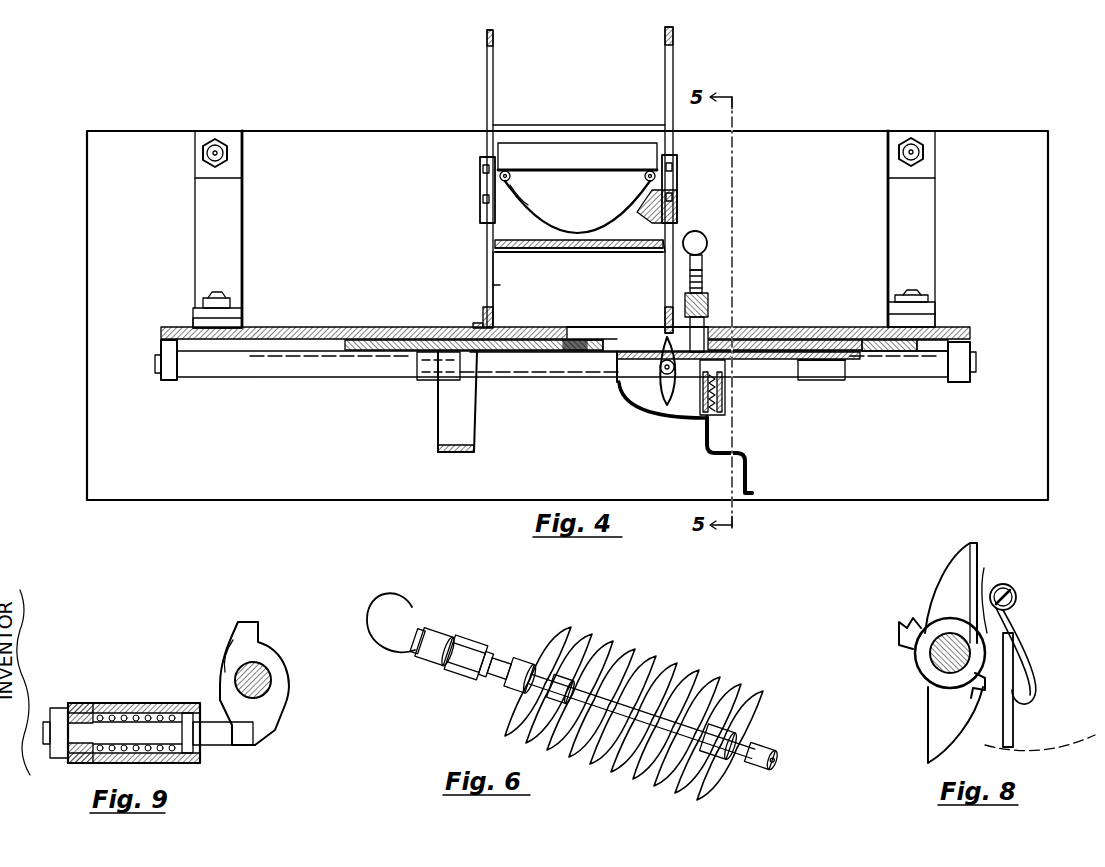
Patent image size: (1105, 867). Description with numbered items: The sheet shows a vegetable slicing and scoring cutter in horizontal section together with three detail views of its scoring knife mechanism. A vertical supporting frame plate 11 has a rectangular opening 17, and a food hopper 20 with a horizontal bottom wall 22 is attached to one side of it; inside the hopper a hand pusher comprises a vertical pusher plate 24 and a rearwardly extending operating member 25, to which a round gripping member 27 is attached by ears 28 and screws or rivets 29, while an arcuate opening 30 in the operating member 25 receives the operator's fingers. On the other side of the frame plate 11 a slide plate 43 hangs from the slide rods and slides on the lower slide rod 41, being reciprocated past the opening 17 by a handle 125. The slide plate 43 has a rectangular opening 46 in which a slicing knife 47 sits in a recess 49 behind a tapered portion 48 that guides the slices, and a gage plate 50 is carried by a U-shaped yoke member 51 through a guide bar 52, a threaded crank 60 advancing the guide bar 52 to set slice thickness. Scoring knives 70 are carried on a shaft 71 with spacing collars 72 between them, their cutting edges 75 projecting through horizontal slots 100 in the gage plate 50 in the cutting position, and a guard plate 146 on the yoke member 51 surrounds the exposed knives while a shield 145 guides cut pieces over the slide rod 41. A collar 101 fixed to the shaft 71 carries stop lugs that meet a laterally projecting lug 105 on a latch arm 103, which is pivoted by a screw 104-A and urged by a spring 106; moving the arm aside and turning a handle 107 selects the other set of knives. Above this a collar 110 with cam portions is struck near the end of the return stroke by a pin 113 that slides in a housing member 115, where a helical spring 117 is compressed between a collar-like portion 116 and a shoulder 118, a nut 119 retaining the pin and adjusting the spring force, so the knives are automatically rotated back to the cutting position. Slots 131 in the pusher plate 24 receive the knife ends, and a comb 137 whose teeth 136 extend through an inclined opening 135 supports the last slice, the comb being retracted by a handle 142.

In FIG. 4, the supporting frame plate 11 is at (165, 330).
In FIG. 4, the rectangular opening 17 is at (495, 327).
In FIG. 4, the food hopper 20 is at (579, 268).
In FIG. 4, the horizontal bottom wall 22 is at (490, 285).
In FIG. 4, the vertical pusher plate 24 is at (512, 258).
In FIG. 4, the operating member 25 is at (632, 230).
In FIG. 4, the gripping member 27 is at (586, 150).
In FIG. 4, the ears 28 is at (652, 172).
In FIG. 4, the screws or rivets 29 is at (644, 178).
In FIG. 4, the arcuate opening 30 is at (530, 200).
In FIG. 4, the slide rod 41 is at (275, 375).
In FIG. 4, the slide plate 43 is at (895, 355).
In FIG. 4, the rectangular opening 46 is at (825, 345).
In FIG. 4, the slicing knife 47 is at (596, 342).
In FIG. 4, the tapered portion 48 is at (593, 345).
In FIG. 4, the recess 49 is at (566, 342).
In FIG. 4, the gage plate 50 is at (800, 360).
In FIG. 4, the yoke member 51 is at (727, 408).
In FIG. 4, the guide bar 52 is at (728, 380).
In FIG. 4, the crank 60 is at (720, 458).
In FIG. 4, the scoring knives 70 is at (672, 385).
In FIG. 6, the scoring knives 70 is at (762, 710).
In FIG. 8, the scoring knives 70 is at (948, 580).
In FIG. 9, the shaft 71 is at (262, 686).
In FIG. 6, the shaft 71 is at (768, 762).
In FIG. 8, the shaft 71 is at (940, 655).
In FIG. 6, the spacing collars 72 is at (640, 700).
In FIG. 6, the cutting edges 75 is at (720, 685).
In FIG. 8, the cutting edges 75 is at (972, 555).
In FIG. 4, the horizontal slots 100 is at (648, 360).
In FIG. 8, the collar 101 is at (945, 688).
In FIG. 8, the latch arm 103 is at (1016, 722).
In FIG. 8, the screw 104-A is at (1016, 596).
In FIG. 8, the laterally projecting lug 105 is at (985, 572).
In FIG. 8, the spring 106 is at (1030, 676).
In FIG. 6, the handle 107 is at (392, 598).
In FIG. 9, the collar 110 is at (282, 666).
In FIG. 6, the collar 110 is at (458, 660).
In FIG. 9, the pin 113 is at (222, 738).
In FIG. 9, the housing member 115 is at (108, 703).
In FIG. 9, the collar-like portion 116 is at (186, 718).
In FIG. 9, the helical spring 117 is at (143, 703).
In FIG. 9, the shoulder 118 is at (80, 713).
In FIG. 9, the nut 119 is at (55, 705).
In FIG. 4, the handle 125 is at (445, 452).
In FIG. 4, the slots 131 is at (648, 254).
In FIG. 4, the opening 135 is at (716, 330).
In FIG. 4, the teeth 136 is at (708, 312).
In FIG. 4, the comb 137 is at (707, 290).
In FIG. 4, the handle 142 is at (700, 245).
In FIG. 4, the shield 145 is at (512, 352).
In FIG. 4, the guard plate 146 is at (665, 415).